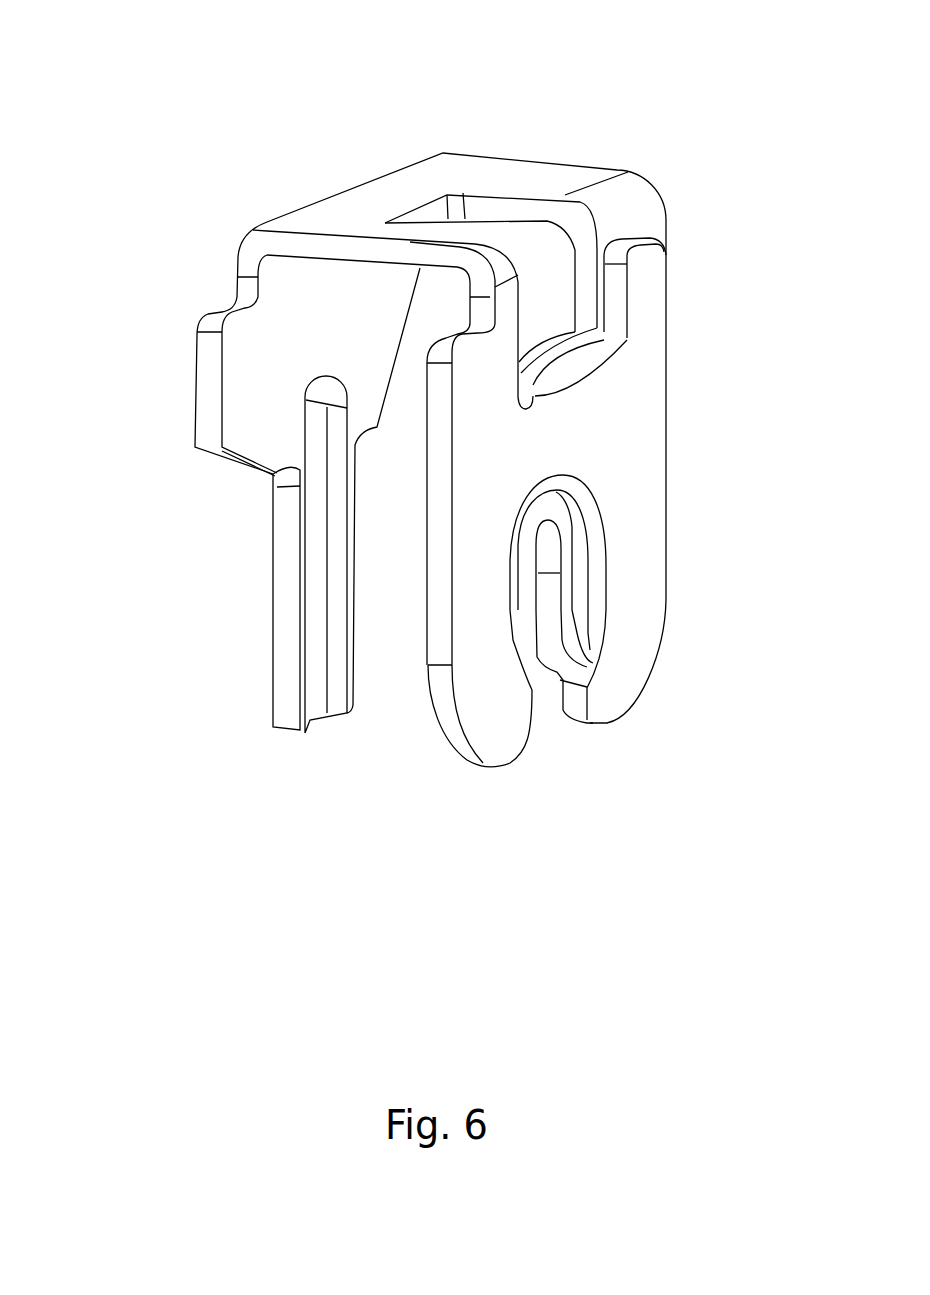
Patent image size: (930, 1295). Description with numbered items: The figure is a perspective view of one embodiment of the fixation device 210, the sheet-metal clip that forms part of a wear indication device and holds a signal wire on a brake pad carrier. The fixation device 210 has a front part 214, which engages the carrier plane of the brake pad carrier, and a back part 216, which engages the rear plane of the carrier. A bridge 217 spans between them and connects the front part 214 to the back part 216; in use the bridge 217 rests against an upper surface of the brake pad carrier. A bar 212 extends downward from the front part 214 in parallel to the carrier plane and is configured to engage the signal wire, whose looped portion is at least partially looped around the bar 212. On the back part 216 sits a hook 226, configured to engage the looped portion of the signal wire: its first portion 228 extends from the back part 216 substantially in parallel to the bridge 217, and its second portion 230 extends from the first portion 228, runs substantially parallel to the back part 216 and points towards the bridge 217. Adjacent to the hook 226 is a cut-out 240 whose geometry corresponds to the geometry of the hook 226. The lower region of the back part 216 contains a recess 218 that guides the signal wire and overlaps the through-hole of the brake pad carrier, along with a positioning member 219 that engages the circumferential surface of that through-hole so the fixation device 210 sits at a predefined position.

The fixation device 210 is at (557, 140).
The bar 212 is at (322, 611).
The front part 214 is at (262, 350).
The back part 216 is at (613, 464).
The bridge 217 is at (445, 172).
The recess 218 is at (549, 712).
The positioning member 219 is at (550, 615).
The hook 226 is at (630, 270).
The first portion 228 is at (558, 356).
The second portion 230 is at (632, 296).
The cut-out 240 is at (521, 240).